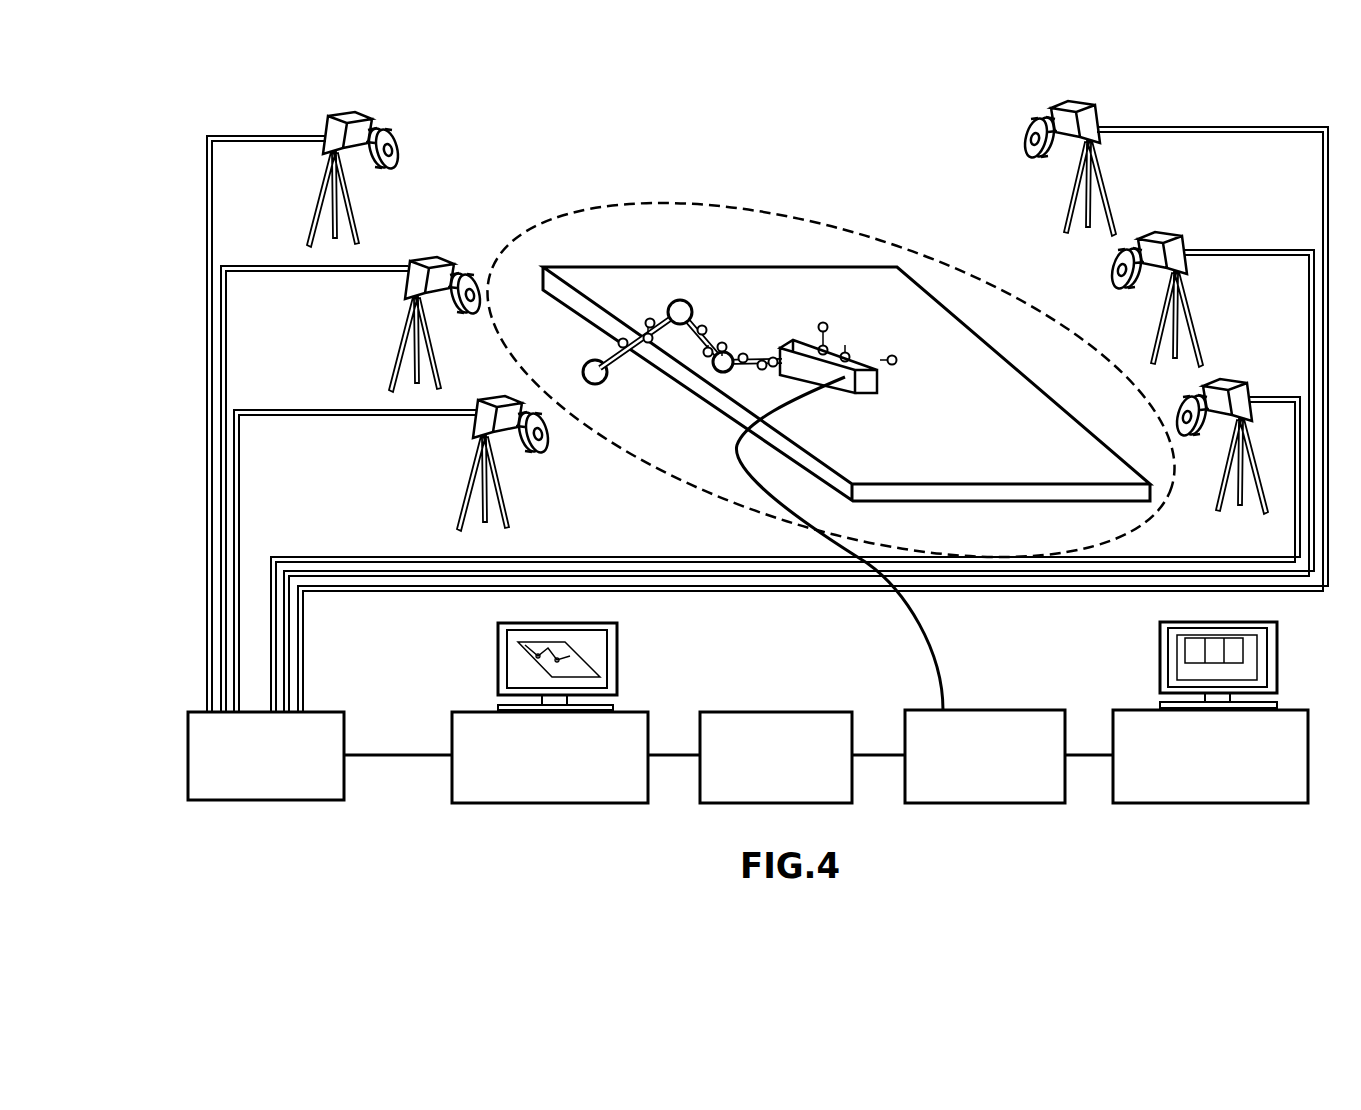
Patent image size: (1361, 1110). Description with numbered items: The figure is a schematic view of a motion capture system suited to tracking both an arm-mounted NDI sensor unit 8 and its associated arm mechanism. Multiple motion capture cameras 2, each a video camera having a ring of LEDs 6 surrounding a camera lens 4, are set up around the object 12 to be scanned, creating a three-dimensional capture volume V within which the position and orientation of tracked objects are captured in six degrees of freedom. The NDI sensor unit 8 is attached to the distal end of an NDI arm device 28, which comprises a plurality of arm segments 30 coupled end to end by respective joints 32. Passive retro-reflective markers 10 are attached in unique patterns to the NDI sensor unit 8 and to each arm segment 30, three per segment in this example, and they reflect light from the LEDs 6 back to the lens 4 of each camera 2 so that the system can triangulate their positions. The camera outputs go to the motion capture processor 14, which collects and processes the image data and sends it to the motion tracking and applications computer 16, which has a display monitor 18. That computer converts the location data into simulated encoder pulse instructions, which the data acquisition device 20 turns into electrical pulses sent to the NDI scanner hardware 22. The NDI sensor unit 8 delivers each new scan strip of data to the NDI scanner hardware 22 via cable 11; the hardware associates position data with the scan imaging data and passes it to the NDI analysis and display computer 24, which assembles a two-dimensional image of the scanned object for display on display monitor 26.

The motion capture camera 2 is at (787, 297).
The camera lens 4 is at (398, 174).
The ring of LEDs 6 is at (411, 156).
The NDI sensor unit 8 is at (845, 378).
The retro-reflective markers 10 is at (648, 320).
The cable 11 is at (930, 650).
The object to be scanned 12 is at (970, 327).
The motion capture processor 14 is at (346, 728).
The motion tracking and applications computer 16 is at (630, 710).
The display monitor 18 is at (622, 640).
The data acquisition device 20 is at (827, 710).
The NDI scanner hardware 22 is at (1050, 708).
The NDI analysis and display computer 24 is at (1293, 708).
The display monitor 26 is at (1278, 635).
The NDI arm device 28 is at (669, 329).
The arm segments 30 is at (612, 358).
The joints 32 is at (690, 305).
The capture volume V is at (808, 208).